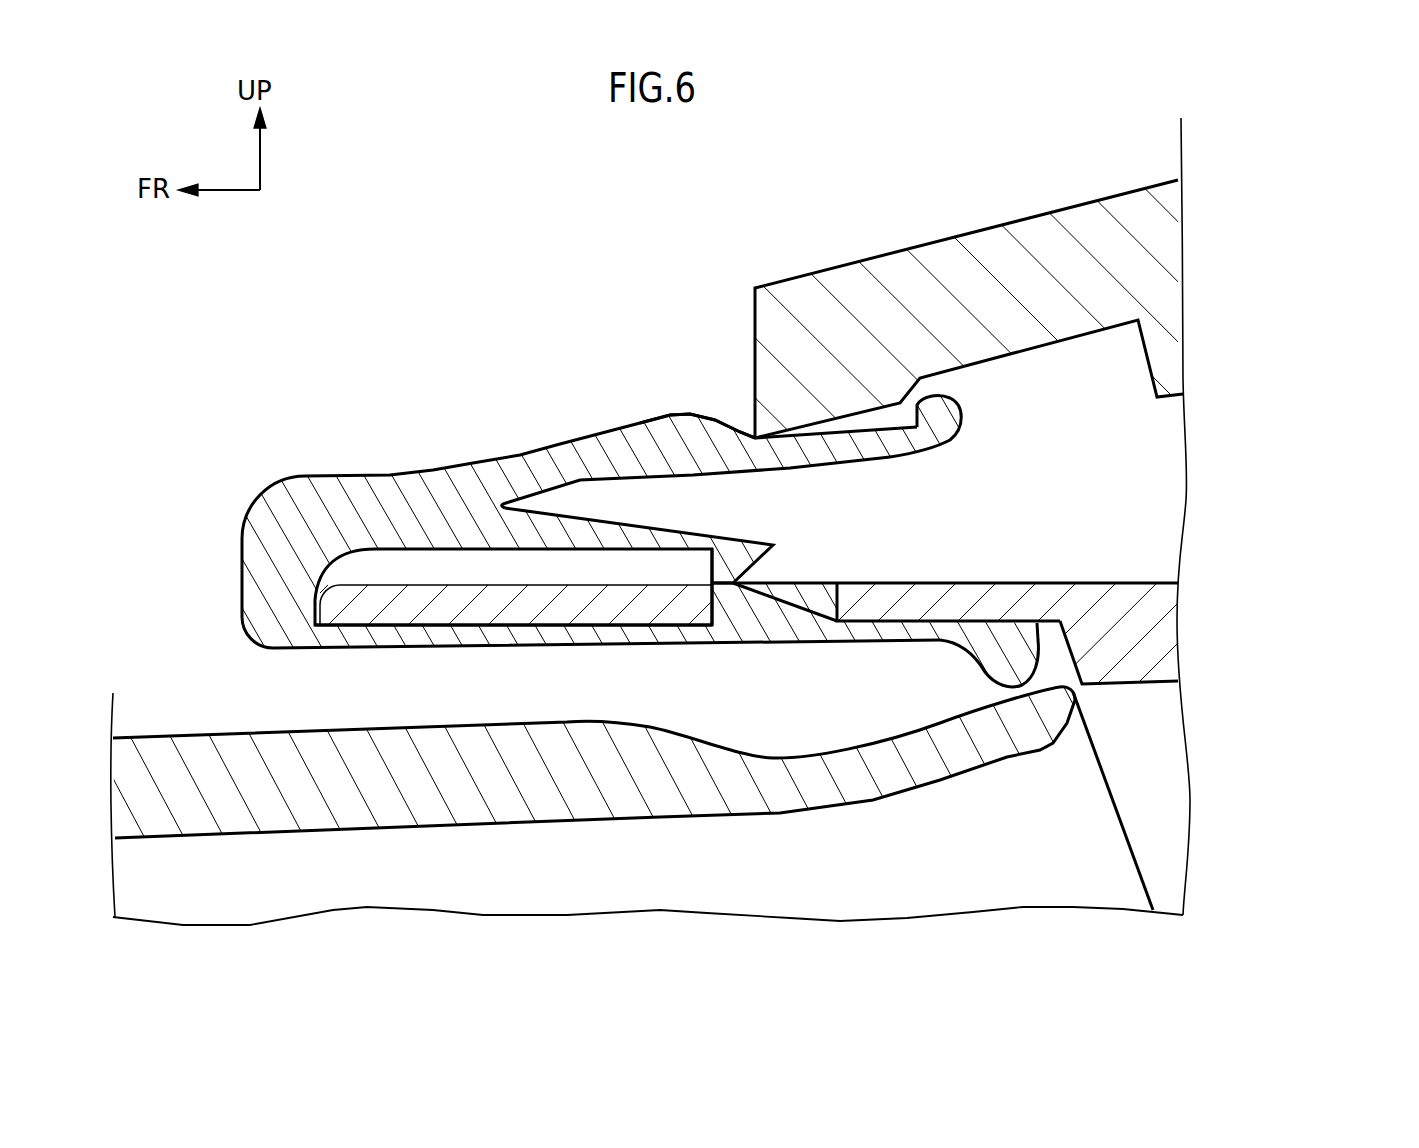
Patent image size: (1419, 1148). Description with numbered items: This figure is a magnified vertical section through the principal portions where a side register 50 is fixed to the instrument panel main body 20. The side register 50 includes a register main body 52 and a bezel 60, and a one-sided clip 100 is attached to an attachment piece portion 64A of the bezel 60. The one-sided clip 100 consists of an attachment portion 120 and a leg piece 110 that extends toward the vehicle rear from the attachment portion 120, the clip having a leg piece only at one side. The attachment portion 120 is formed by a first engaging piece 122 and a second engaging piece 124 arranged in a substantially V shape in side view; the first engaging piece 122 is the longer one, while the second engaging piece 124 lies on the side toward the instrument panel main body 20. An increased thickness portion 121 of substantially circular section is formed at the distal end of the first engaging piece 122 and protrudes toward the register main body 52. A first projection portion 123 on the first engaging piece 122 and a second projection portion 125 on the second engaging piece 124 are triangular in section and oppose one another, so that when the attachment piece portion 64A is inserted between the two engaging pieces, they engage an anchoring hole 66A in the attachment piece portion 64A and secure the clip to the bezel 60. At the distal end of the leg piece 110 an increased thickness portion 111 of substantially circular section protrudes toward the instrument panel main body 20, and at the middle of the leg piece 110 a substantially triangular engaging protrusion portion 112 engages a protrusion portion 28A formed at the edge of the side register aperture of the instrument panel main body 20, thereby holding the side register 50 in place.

The instrument panel main body 20 is at (967, 315).
The protrusion portion 28A is at (843, 400).
The side register 50 is at (1310, 838).
The register main body 52 is at (700, 805).
The bezel 60 is at (767, 625).
The attachment piece portion 64A is at (518, 605).
The anchoring hole 66A is at (838, 597).
The one-sided clip 100 is at (642, 543).
The leg piece 110 is at (650, 422).
The increased thickness portion 111 is at (955, 403).
The engaging protrusion portion 112 is at (662, 410).
The attachment portion 120 is at (583, 604).
The increased thickness portion 121 is at (1000, 662).
The first engaging piece 122 is at (604, 637).
The first projection portion 123 is at (730, 600).
The second engaging piece 124 is at (660, 535).
The second projection portion 125 is at (735, 562).